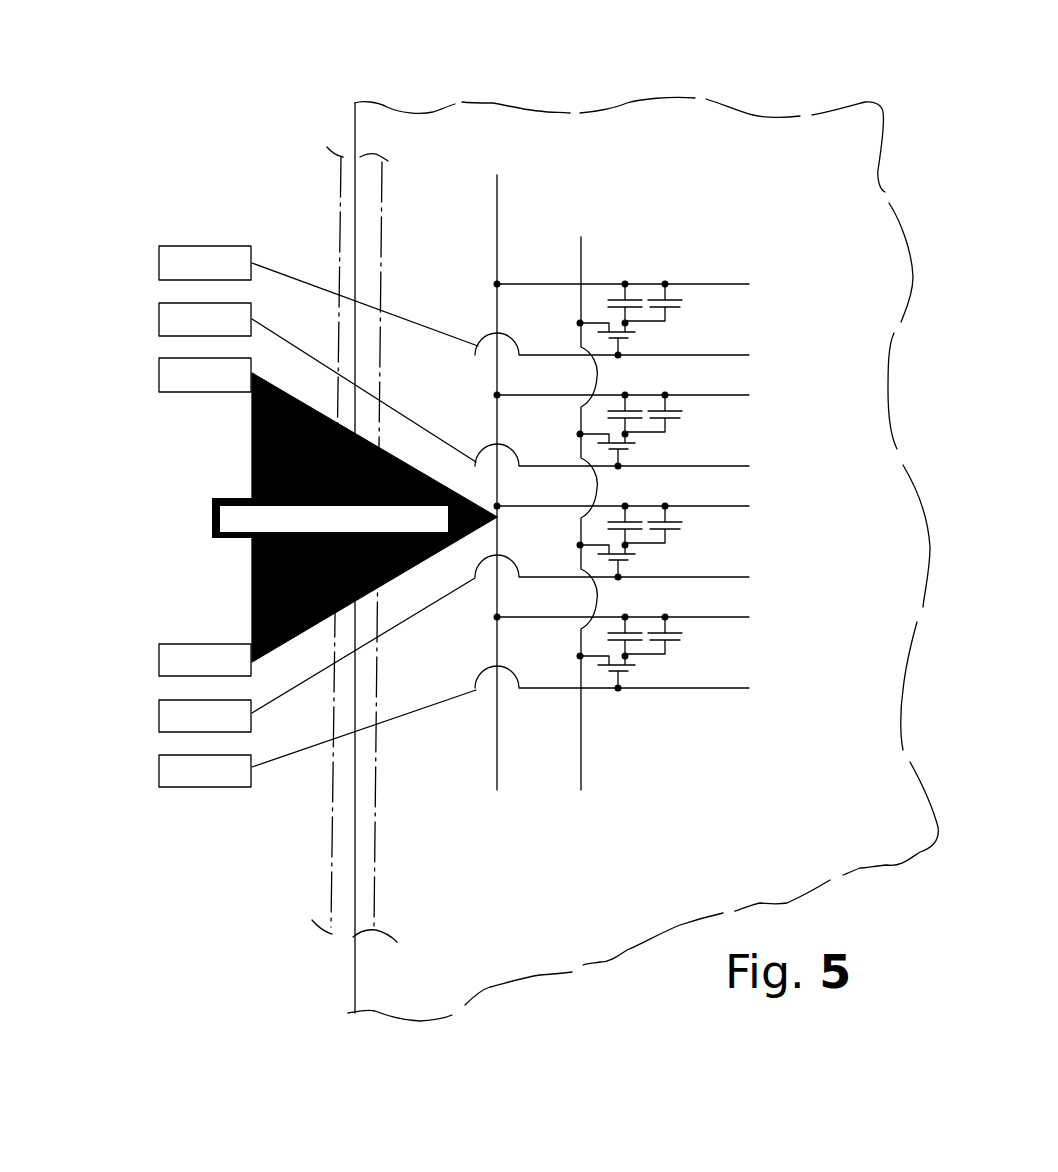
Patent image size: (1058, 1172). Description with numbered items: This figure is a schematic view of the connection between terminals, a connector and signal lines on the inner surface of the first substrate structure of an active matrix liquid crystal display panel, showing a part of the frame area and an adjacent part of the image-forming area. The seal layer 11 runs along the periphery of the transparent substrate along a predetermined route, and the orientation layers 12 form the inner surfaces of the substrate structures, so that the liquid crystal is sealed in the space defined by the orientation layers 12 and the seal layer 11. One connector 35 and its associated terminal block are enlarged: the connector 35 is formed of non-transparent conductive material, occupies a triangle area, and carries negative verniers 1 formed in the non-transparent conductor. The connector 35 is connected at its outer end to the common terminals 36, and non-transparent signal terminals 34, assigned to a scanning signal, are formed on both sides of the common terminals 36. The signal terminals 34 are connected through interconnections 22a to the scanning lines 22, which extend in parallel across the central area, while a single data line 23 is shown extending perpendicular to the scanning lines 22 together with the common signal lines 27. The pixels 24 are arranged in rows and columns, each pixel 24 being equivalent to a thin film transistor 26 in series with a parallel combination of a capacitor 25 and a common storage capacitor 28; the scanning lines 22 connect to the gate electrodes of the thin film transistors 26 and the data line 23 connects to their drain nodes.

The negative verniers 1 is at (226, 498).
The seal layer 11 is at (331, 862).
The orientation layers 12 is at (522, 107).
The scanning lines 22 is at (735, 688).
The interconnections 22a is at (373, 306).
The data line 23 is at (590, 763).
The pixels 24 is at (723, 430).
The capacitor 25 is at (637, 300).
The thin film transistor 26 is at (636, 339).
The common signal lines 27 is at (543, 284).
The capacitor (common storage) 28 is at (668, 300).
The signal terminals 34 is at (158, 264).
The connector 35 is at (251, 618).
The common terminals 36 is at (158, 376).